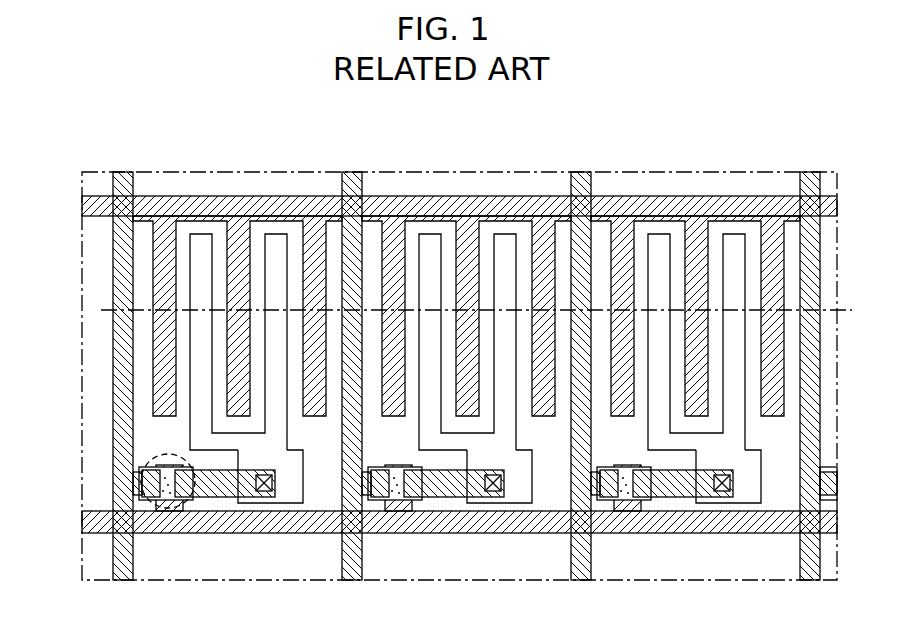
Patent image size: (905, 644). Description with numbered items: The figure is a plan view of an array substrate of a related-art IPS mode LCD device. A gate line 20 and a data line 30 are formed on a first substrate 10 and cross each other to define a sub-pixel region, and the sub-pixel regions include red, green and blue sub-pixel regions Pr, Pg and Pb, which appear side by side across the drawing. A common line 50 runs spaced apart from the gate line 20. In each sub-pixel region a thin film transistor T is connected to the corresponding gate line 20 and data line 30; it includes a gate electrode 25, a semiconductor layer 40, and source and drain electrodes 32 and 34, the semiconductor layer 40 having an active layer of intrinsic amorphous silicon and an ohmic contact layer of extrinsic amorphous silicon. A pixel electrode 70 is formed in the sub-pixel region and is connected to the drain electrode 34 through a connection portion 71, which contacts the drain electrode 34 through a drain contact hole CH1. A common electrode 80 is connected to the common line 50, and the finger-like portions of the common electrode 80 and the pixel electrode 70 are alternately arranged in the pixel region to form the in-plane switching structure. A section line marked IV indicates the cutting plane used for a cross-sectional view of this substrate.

The first substrate 10 is at (789, 571).
The gate line 20 is at (493, 535).
The gate electrode 25 is at (170, 465).
The data line 30 is at (113, 378).
The source electrode 32 is at (137, 488).
The drain electrode 34 is at (230, 487).
The semiconductor layer 40 is at (165, 497).
The common line 50 is at (436, 196).
The pixel electrode 70 is at (280, 420).
The connection portion 71 is at (290, 477).
The common electrode 80 is at (313, 222).
The drain contact hole CH1 is at (266, 473).
The thin film transistor T is at (194, 503).
The red sub-pixel region Pr is at (183, 196).
The green sub-pixel region Pg is at (508, 196).
The blue sub-pixel region Pb is at (683, 196).
The section line IV- IV is at (102, 316).